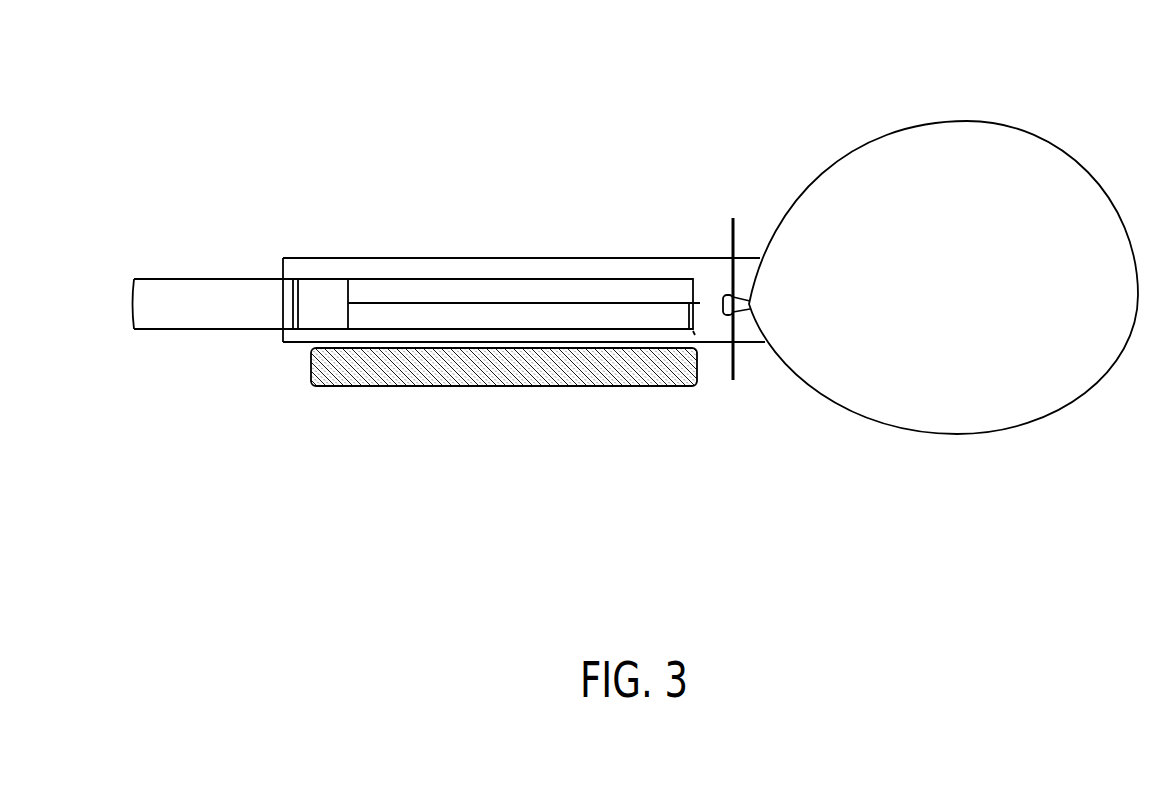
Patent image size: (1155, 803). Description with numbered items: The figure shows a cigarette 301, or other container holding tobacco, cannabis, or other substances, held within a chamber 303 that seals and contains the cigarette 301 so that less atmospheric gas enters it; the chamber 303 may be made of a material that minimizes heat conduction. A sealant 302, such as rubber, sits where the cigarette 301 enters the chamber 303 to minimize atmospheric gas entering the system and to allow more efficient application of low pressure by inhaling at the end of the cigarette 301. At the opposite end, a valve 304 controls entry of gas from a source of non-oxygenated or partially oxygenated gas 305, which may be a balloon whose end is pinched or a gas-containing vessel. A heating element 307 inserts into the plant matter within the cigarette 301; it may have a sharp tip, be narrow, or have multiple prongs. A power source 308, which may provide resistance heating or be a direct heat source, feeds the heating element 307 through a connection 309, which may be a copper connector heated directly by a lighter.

The cigarette 301 is at (190, 278).
The sealant 302 is at (277, 268).
The chamber 303 is at (426, 257).
The valve 304 is at (732, 230).
The source of non-oxygenated or partially oxygenated gas 305 is at (875, 142).
The heating element 307 is at (347, 303).
The power source 308 is at (582, 387).
The connection 309 is at (692, 336).